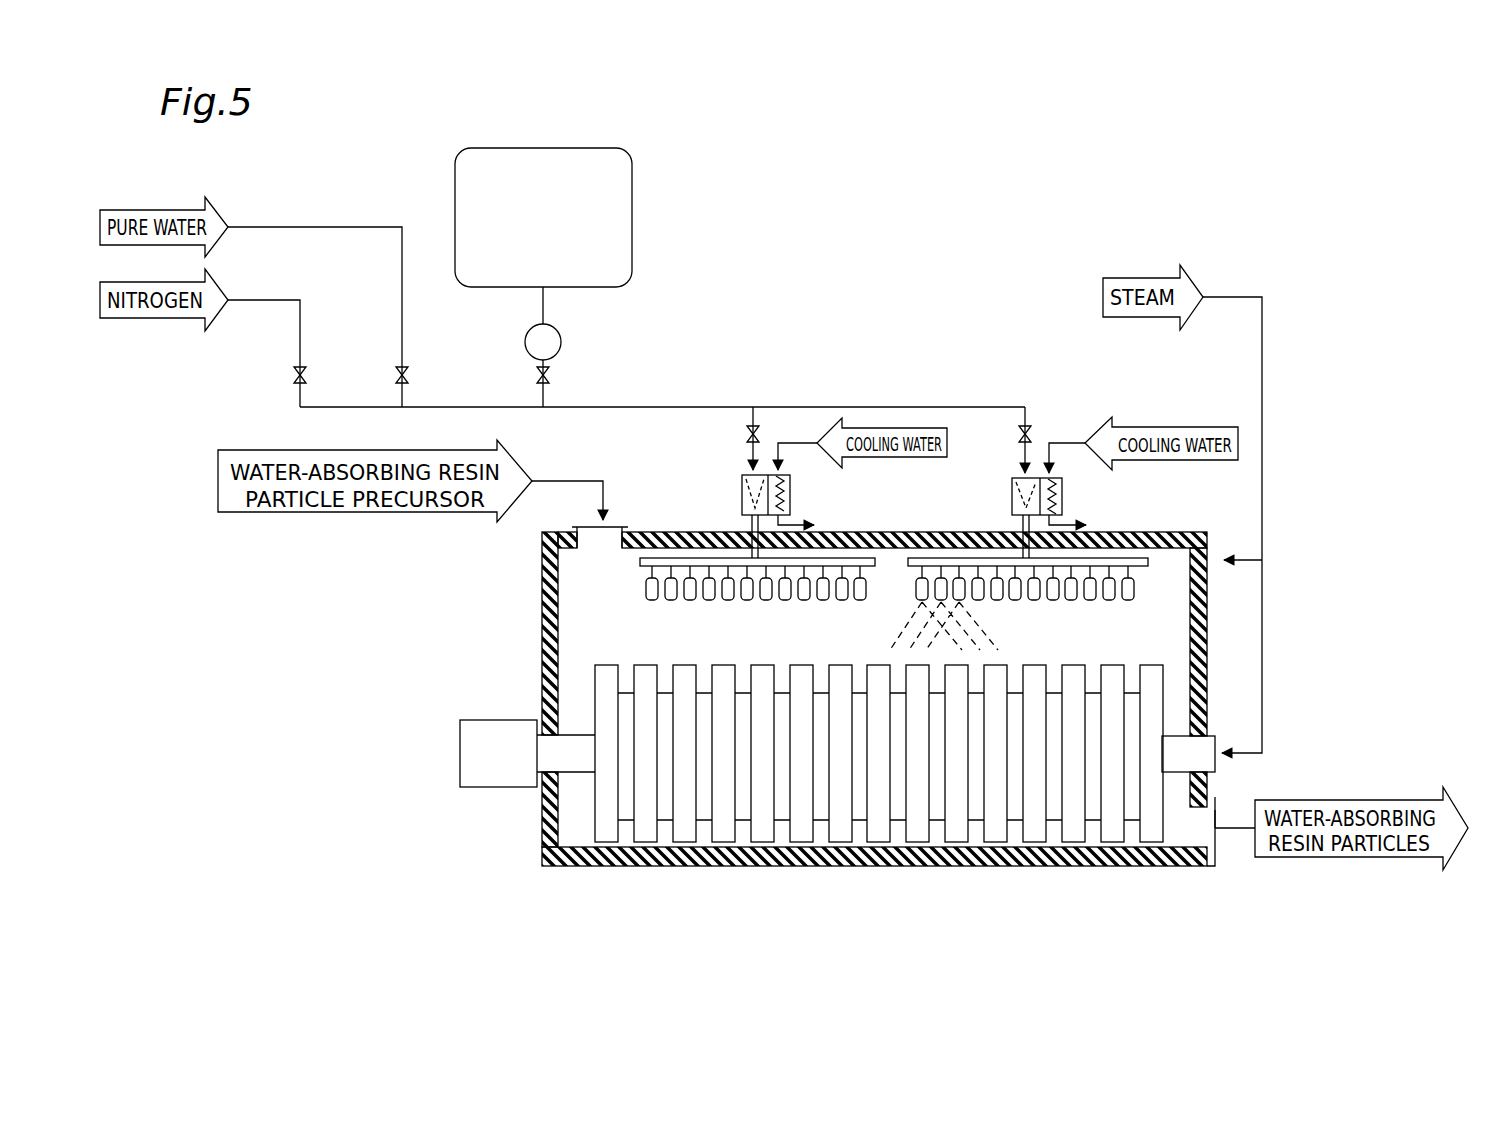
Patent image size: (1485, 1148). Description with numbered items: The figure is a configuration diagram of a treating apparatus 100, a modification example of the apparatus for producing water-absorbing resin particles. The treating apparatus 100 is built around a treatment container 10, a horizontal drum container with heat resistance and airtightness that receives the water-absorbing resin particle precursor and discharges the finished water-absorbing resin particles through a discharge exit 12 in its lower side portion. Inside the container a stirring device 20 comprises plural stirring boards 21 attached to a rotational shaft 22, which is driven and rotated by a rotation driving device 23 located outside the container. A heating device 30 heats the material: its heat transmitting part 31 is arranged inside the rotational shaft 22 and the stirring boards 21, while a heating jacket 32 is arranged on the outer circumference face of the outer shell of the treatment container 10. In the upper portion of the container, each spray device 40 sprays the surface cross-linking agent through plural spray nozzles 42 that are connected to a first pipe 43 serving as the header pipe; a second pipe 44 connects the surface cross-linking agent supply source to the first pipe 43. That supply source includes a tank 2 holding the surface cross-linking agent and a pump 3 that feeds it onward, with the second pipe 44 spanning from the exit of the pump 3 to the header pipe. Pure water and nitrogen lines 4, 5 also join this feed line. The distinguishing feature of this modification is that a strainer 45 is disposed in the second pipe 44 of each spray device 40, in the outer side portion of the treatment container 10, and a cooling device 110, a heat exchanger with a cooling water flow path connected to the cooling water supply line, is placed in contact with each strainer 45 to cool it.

The tank 2 is at (632, 180).
The pump 3 is at (562, 342).
The pure water supply line 4 is at (328, 227).
The nitrogen supply line 5 is at (262, 300).
The treatment container 10 is at (543, 598).
The discharge exit 12 is at (1215, 815).
The stirring device 20 is at (863, 769).
The stirring boards 21 is at (752, 826).
The rotational shaft 22 is at (1178, 772).
The rotation driving device 23 is at (460, 752).
The heating device 30 is at (1216, 662).
The heat transmitting part 31 is at (1215, 770).
The heating jacket 32 is at (1172, 532).
The spray device 40 is at (888, 531).
The spray nozzles 42 is at (782, 600).
The first pipe 43 is at (640, 566).
The second pipe 44 is at (746, 528).
The strainer 45 is at (742, 492).
The treating apparatus 100 is at (1298, 447).
The cooling device 110 is at (790, 504).